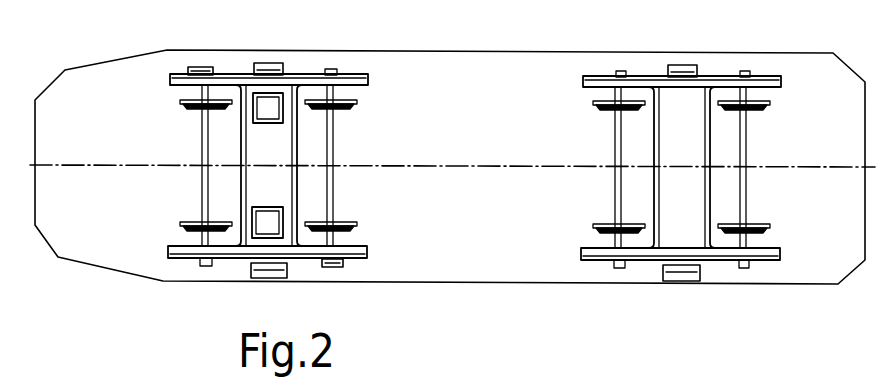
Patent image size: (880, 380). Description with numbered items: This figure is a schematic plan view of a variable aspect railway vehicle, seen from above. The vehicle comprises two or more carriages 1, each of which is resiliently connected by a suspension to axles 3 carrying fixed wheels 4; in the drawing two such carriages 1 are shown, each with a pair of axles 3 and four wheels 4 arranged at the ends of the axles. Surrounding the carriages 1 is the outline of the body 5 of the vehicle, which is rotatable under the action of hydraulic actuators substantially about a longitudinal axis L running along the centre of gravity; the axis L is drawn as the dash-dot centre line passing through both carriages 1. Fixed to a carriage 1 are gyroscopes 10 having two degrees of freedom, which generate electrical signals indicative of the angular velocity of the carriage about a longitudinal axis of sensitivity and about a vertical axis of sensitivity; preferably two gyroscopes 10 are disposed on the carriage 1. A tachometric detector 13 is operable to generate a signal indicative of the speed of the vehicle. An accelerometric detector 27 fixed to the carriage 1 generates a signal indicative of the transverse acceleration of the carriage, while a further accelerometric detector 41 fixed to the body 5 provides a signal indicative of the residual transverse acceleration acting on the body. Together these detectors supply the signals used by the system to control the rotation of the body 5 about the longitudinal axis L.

The carriage 1 is at (241, 177).
The axle 3 is at (205, 145).
The wheel 4 is at (195, 103).
The body 5 is at (484, 284).
The gyroscope 10 is at (272, 112).
The tachometric detector 13 is at (218, 69).
The accelerometric detector 27 is at (272, 62).
The accelerometric detector 41 is at (268, 274).
The longitudinal axis L is at (478, 162).